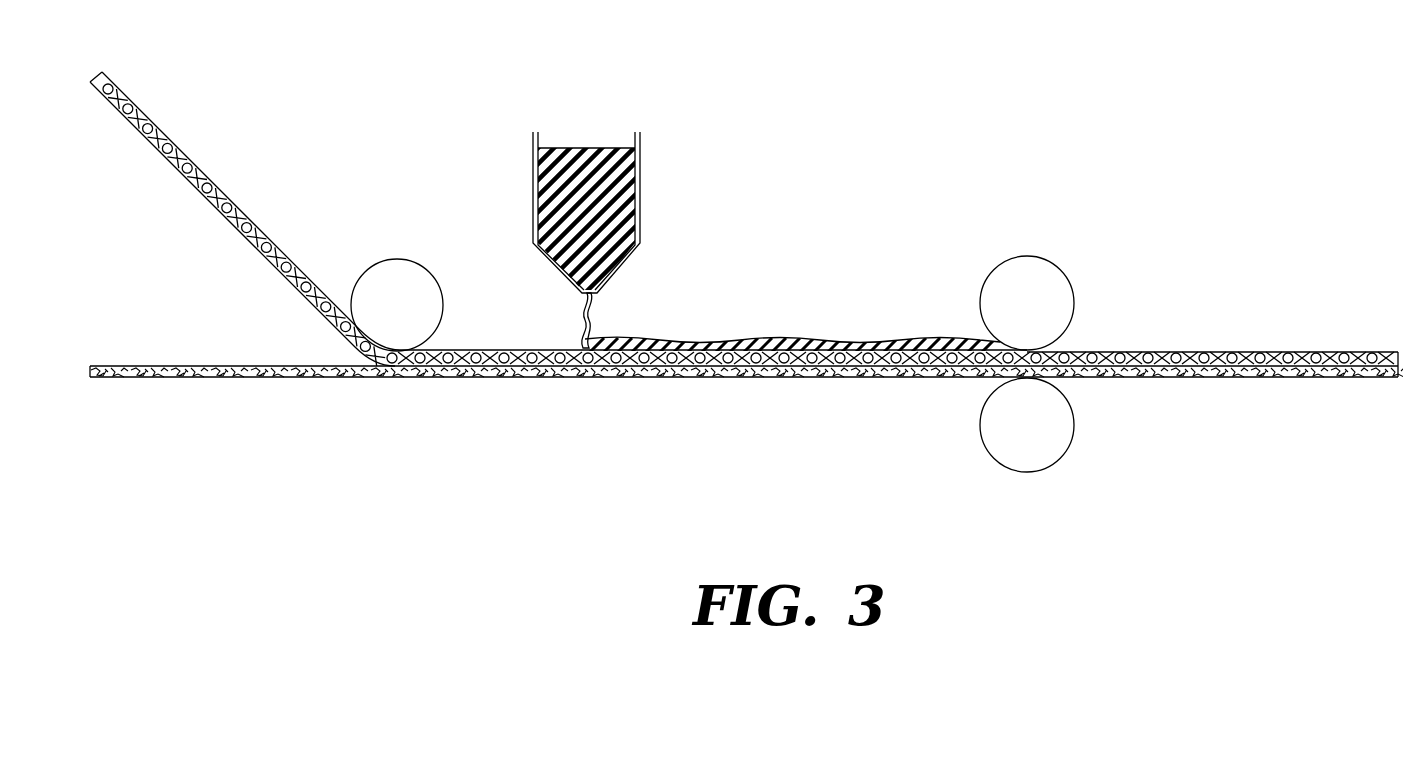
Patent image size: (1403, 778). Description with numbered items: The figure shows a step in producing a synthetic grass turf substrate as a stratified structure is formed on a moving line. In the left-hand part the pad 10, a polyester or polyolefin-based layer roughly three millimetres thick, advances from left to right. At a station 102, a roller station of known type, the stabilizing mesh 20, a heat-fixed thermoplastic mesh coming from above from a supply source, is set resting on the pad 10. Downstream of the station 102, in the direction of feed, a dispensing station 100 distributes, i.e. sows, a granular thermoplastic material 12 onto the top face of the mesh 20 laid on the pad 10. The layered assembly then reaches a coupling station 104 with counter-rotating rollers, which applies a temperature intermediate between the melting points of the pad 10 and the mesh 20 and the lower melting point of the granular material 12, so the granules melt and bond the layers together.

The pad 10 is at (198, 380).
The granular thermoplastic material 12 is at (596, 328).
The stabilizing mesh 20 is at (168, 142).
The dispensing station 100 is at (641, 212).
The station 102 is at (403, 268).
The coupling station 104 is at (1026, 263).